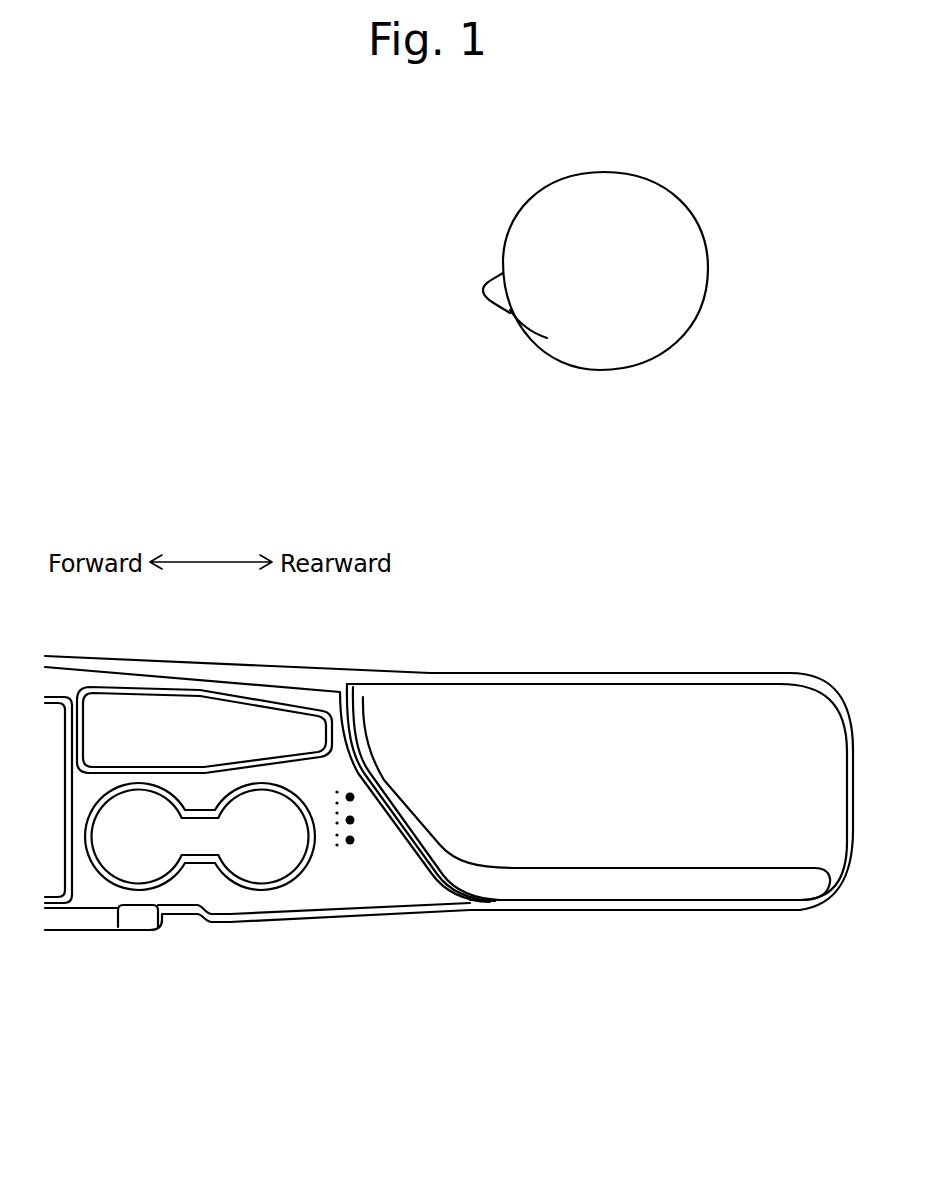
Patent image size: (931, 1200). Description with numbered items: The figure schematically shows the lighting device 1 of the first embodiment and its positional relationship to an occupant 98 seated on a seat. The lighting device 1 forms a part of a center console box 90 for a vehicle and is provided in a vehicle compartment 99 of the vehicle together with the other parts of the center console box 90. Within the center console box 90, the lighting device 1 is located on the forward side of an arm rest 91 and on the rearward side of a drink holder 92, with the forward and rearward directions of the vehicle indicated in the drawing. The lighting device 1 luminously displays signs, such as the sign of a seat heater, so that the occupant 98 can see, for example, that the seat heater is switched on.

The lighting device 1 is at (510, 313).
The center console box 90 is at (520, 923).
The arm rest 91 is at (588, 693).
The drink holder 92 is at (270, 890).
The occupant 98 is at (743, 242).
The vehicle compartment 99 is at (722, 582).